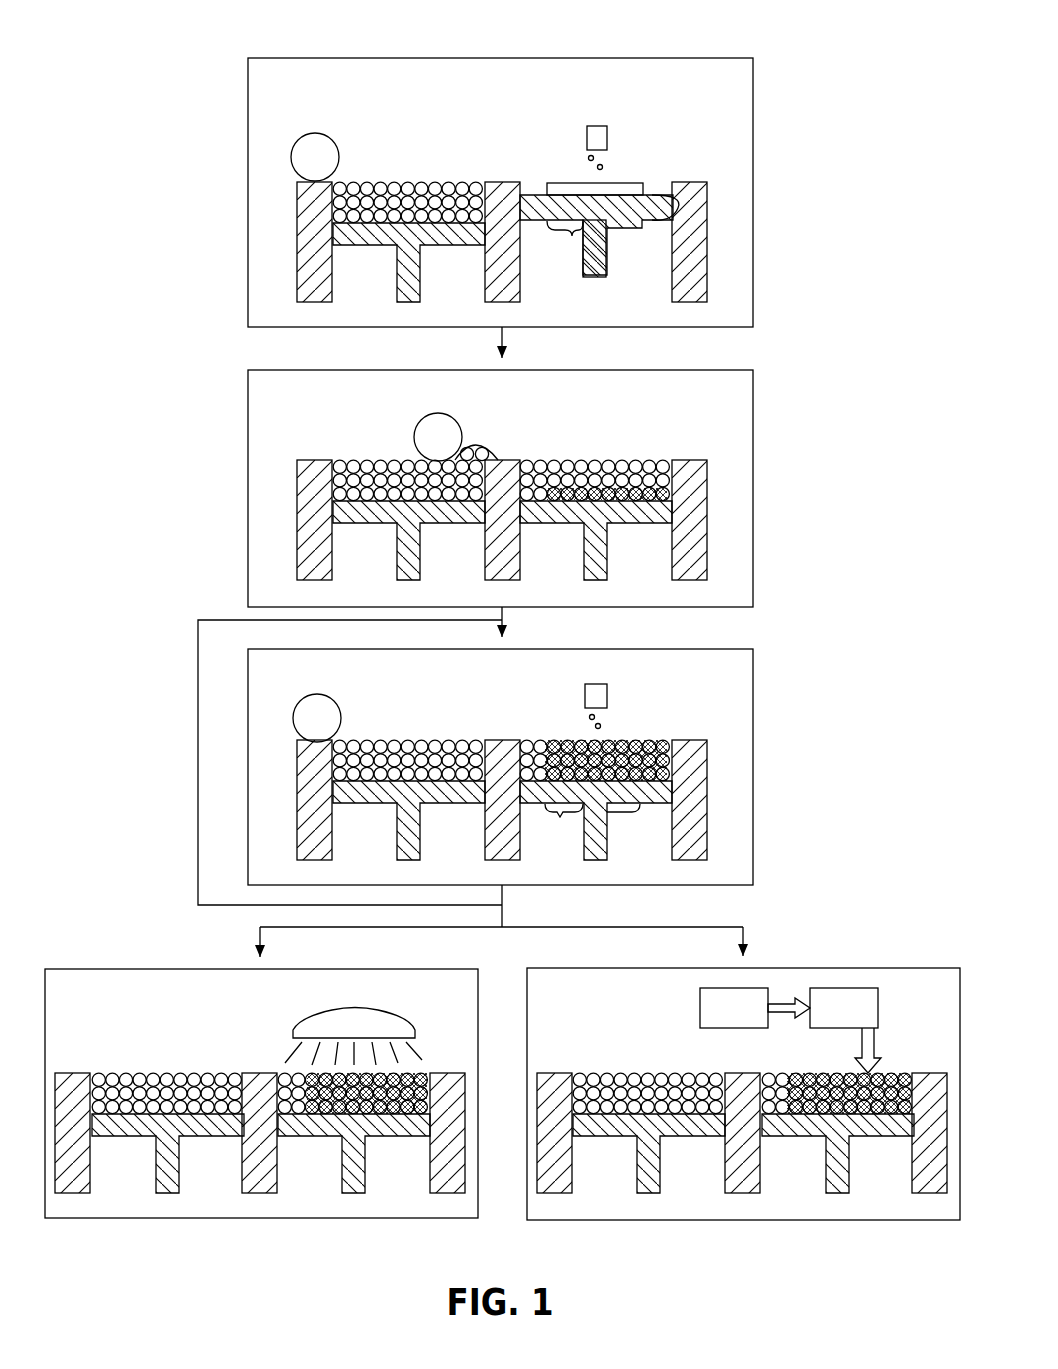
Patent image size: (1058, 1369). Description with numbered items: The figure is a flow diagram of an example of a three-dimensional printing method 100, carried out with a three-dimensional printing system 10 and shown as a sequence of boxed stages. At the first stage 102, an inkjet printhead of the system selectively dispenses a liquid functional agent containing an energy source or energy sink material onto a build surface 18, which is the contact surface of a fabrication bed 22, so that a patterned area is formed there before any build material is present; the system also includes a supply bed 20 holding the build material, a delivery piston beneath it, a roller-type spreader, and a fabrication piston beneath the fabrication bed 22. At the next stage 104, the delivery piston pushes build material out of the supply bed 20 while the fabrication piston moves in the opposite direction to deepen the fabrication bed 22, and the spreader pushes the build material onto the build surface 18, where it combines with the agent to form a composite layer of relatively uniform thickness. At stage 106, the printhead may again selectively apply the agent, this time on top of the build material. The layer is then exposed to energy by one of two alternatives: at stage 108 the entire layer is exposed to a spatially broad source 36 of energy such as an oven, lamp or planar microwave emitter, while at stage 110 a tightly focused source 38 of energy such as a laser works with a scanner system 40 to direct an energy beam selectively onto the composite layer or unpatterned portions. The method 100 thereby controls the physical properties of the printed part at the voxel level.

The 3D printing method 100 is at (186, 97).
The 3D printing system 10 is at (294, 120).
The build surface 18 is at (672, 220).
The supply bed 20 is at (337, 203).
The fabrication bed 22 is at (523, 195).
The spatially broad energy source 36 is at (355, 1017).
The tightly focused energy source 38 is at (726, 1022).
The scanner system 40 is at (836, 1022).
The step of selectively applying liquid functional agent before build material 102 is at (756, 186).
The step of applying build material to form composite layer 104 is at (756, 485).
The step of selectively applying liquid functional agent on build material 106 is at (756, 763).
The step of exposing layer to spatially broad energy source 108 is at (122, 969).
The step of exposing layer to tightly focused energy source 110 is at (888, 968).